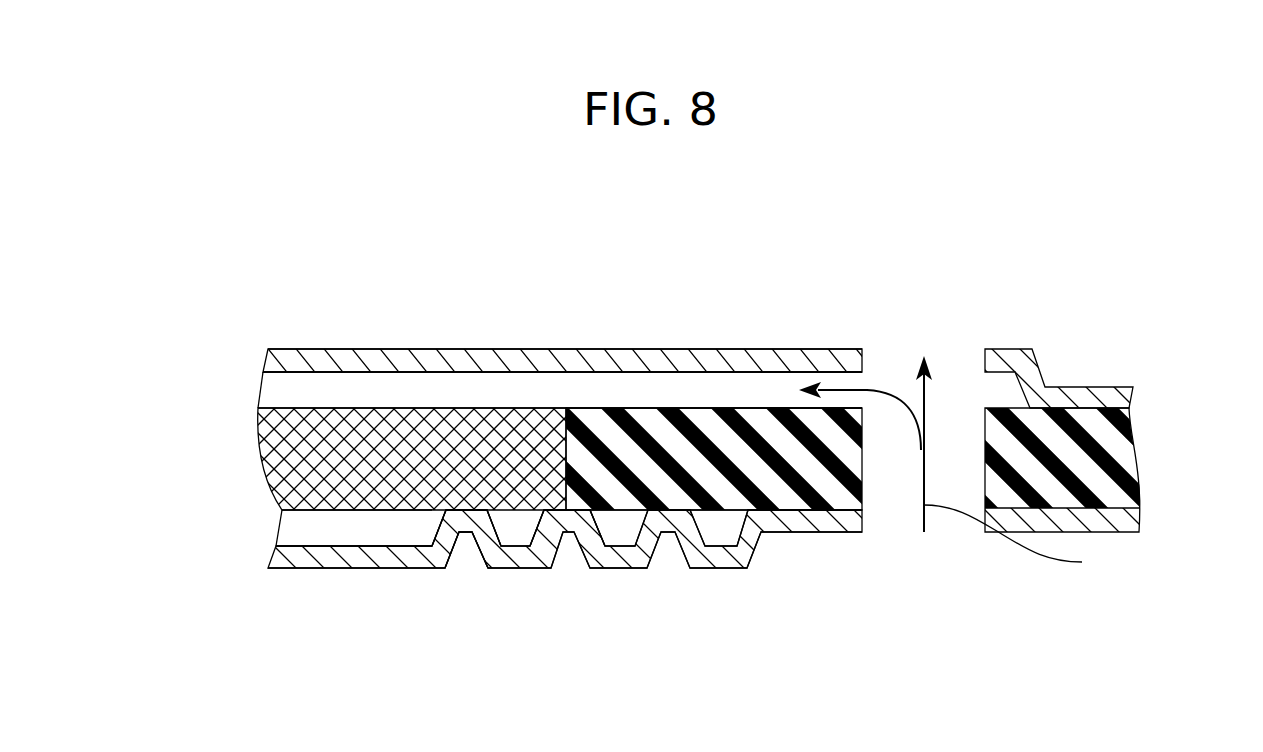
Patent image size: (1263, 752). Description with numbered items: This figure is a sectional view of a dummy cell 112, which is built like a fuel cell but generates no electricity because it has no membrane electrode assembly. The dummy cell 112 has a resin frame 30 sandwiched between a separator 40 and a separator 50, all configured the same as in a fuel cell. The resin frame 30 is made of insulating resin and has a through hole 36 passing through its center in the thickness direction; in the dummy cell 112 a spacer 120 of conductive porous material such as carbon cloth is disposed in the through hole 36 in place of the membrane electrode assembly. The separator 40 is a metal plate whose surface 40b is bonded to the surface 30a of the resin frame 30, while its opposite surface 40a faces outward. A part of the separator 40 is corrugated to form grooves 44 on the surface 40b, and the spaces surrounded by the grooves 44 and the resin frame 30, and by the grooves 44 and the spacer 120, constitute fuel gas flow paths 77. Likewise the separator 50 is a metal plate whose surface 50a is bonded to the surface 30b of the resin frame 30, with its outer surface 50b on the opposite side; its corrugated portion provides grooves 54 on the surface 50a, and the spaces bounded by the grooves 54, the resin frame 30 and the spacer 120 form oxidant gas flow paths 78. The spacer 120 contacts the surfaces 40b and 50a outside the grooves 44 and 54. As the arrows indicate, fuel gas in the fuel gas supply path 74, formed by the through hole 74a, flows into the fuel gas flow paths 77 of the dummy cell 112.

The dummy cell 112 is at (183, 277).
The separator 40 is at (290, 362).
The surface 40a is at (452, 348).
The surface 40b is at (519, 386).
The grooves 44 is at (688, 372).
The fuel gas flow paths 77 is at (776, 383).
The spacer 120 is at (282, 451).
The resin frame 30 is at (1118, 452).
The surface 30a is at (637, 408).
The surface 30b is at (860, 533).
The separator 50 is at (297, 556).
The surface 50a is at (816, 508).
The surface 50b is at (790, 535).
The grooves 54 is at (517, 545).
The through hole 36 is at (547, 510).
The oxidant gas flow paths 78 is at (376, 533).
The fuel gas supply path 74 is at (898, 505).
The through hole 74a is at (931, 562).